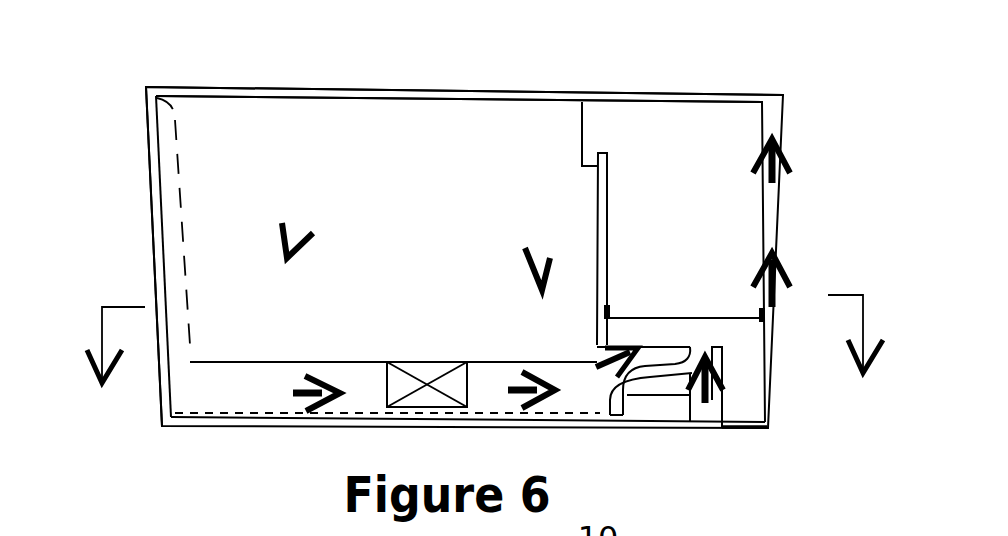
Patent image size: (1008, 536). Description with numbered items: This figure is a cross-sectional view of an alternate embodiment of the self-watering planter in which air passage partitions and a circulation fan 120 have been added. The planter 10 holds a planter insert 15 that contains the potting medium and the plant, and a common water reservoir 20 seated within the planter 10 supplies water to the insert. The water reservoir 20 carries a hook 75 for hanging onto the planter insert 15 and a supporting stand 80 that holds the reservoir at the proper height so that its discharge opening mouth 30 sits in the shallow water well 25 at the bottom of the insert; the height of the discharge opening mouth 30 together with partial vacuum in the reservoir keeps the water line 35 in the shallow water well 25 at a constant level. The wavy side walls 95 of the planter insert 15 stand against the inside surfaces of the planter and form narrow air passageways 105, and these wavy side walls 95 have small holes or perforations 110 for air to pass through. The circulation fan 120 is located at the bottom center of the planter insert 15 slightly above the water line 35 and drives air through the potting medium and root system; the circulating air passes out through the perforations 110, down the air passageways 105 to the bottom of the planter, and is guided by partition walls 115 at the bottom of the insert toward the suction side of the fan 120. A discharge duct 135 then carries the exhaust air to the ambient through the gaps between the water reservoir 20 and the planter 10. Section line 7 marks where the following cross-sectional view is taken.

The planter 10 is at (783, 145).
The planter insert 15 is at (240, 98).
The water reservoir 20 is at (765, 117).
The shallow water well 25 is at (682, 424).
The discharge opening mouth 30 is at (622, 413).
The water line 35 is at (255, 413).
The hook 75 is at (582, 166).
The supporting stand 80 is at (750, 430).
The wavy side walls 95 is at (177, 158).
The air passageways 105 is at (168, 207).
The small holes or perforations 110 is at (183, 250).
The partition walls 115 is at (232, 390).
The circulation fan 120 is at (427, 385).
The discharge duct 135 is at (505, 380).
The section line 7— 7 is at (485, 364).